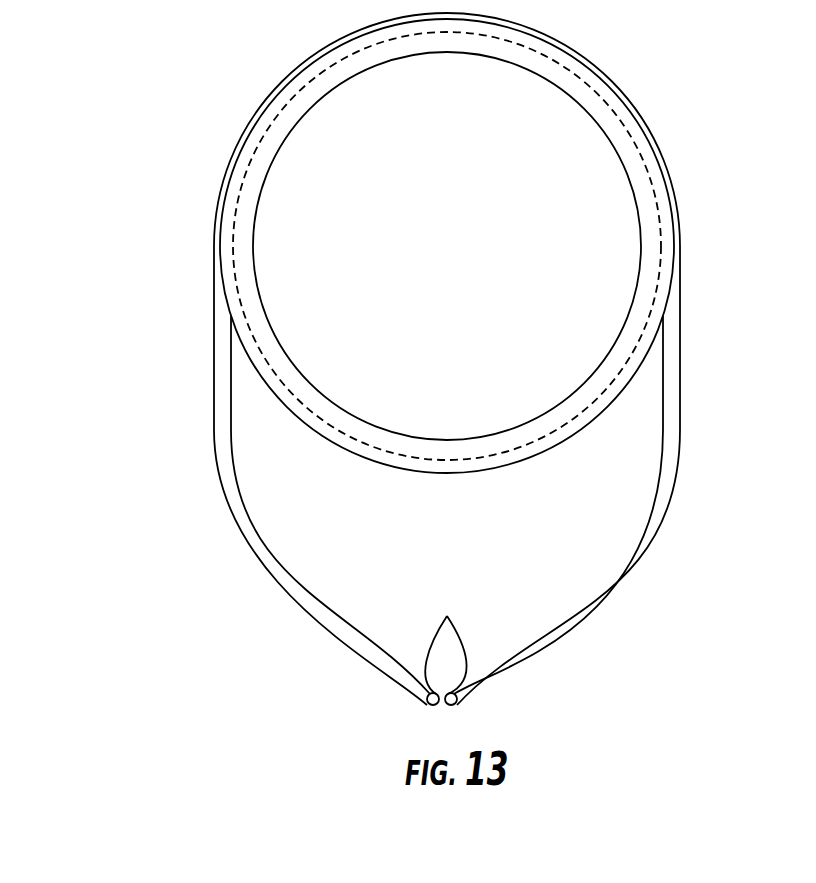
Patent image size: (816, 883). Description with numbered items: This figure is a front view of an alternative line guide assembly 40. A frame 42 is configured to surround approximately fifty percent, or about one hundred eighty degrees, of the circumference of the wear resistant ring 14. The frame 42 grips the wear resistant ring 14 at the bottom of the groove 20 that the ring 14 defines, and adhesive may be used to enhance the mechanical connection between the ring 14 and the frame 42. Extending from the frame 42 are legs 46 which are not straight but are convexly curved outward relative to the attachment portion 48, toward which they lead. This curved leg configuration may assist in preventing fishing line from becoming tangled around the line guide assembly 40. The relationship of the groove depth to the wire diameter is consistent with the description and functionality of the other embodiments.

The line guide assembly 40 is at (165, 123).
The frame 42 is at (292, 72).
The legs 46 is at (262, 538).
The attachment portion 48 is at (445, 646).
The groove 20 is at (275, 390).
The wear resistant ring 14 is at (251, 196).